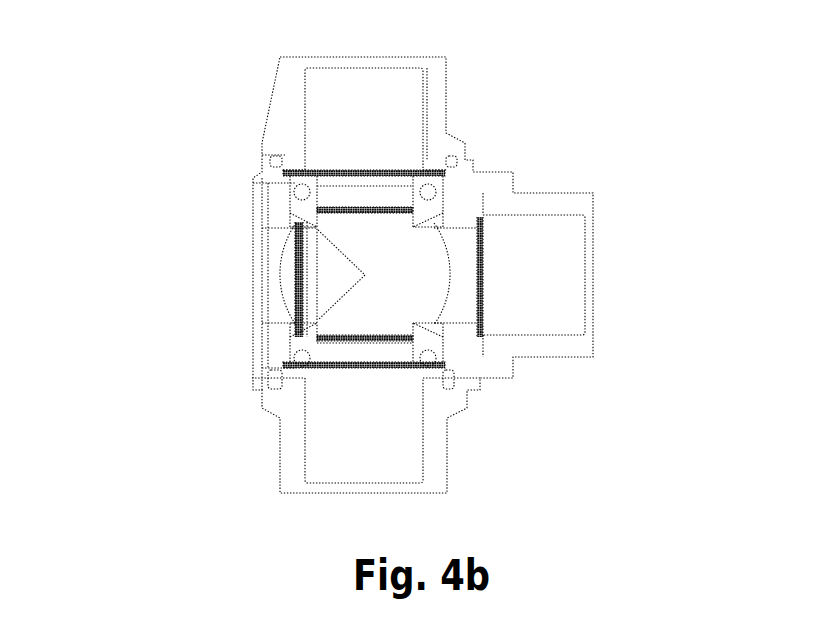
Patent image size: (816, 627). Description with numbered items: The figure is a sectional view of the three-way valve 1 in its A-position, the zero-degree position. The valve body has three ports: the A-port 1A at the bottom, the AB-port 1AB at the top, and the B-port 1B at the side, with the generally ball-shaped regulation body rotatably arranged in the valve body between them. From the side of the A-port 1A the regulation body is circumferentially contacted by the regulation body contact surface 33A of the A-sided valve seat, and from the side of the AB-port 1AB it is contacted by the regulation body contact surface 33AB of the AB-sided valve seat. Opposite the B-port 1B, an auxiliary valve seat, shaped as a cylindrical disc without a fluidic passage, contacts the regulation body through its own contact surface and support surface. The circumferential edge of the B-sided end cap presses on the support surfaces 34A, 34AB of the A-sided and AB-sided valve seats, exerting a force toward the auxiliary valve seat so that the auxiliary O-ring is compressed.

The three-way valve 1 is at (182, 160).
The AB-port 1AB is at (417, 102).
The A-port 1A is at (338, 425).
The B-port 1B is at (540, 273).
The regulation body contact surface 33AB is at (313, 213).
The support surface 34AB is at (427, 213).
The regulation body contact surface 33A is at (315, 336).
The support surface 34A is at (425, 338).